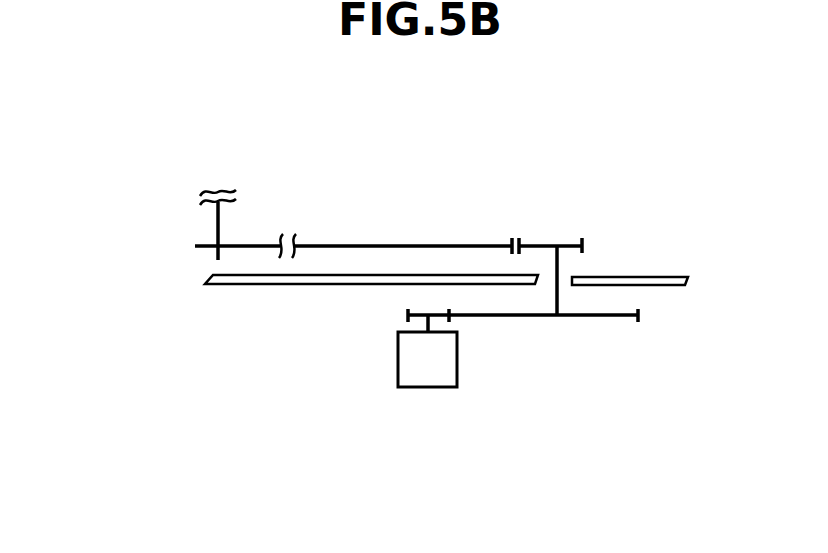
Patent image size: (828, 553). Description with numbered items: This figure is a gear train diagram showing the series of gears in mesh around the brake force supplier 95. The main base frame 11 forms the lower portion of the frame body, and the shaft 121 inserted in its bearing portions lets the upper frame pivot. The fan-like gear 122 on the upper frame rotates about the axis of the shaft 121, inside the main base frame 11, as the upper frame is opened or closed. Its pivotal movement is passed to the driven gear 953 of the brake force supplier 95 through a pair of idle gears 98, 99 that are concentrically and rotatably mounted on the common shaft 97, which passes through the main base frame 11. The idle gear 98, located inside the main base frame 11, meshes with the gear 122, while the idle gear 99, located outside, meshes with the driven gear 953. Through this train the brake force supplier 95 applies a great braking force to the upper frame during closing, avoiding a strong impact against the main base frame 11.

The main base frame 11 is at (233, 287).
The shaft 121 is at (216, 227).
The fan-like gear 122 is at (357, 244).
The brake force supplier 95 is at (457, 367).
The driven gear 953 is at (412, 314).
The common shaft 97 is at (560, 268).
The idle gear 98 is at (537, 244).
The idle gear 99 is at (588, 315).